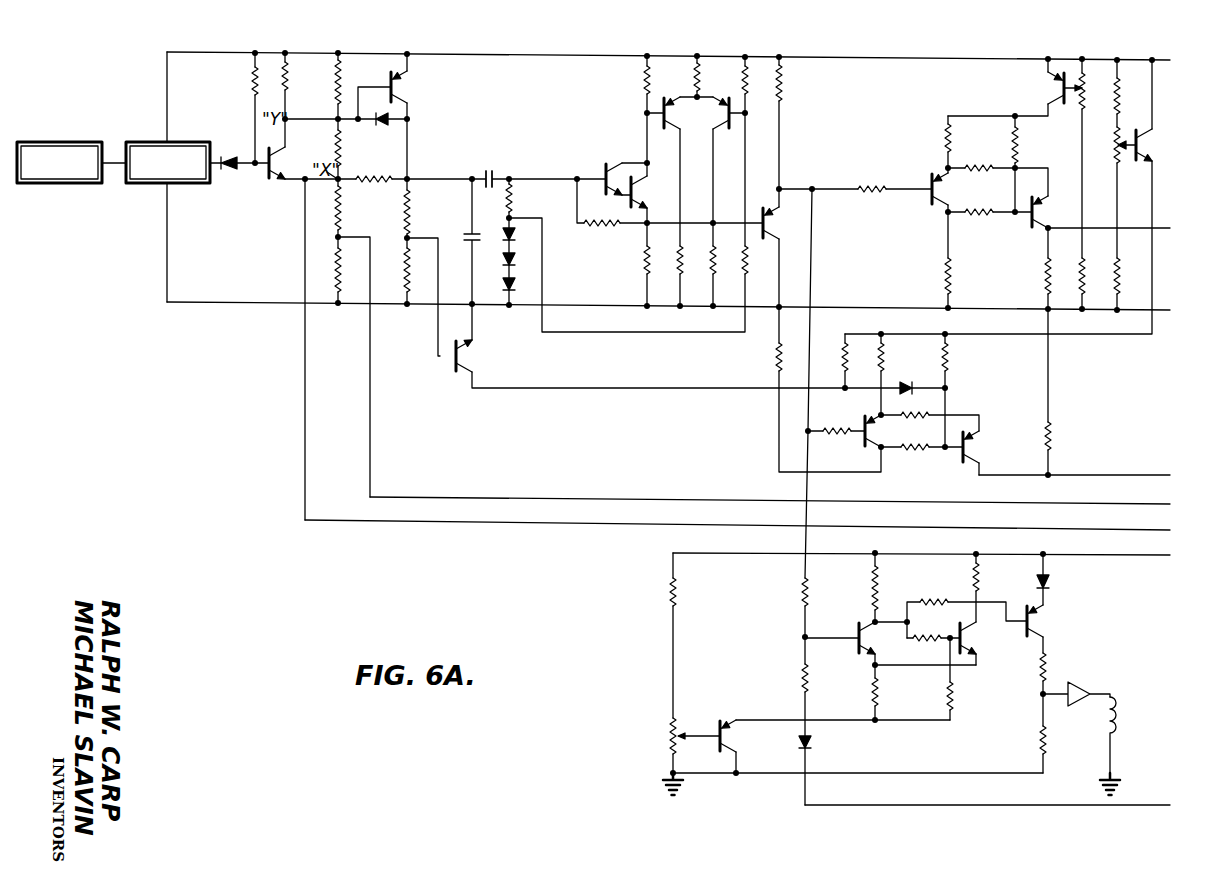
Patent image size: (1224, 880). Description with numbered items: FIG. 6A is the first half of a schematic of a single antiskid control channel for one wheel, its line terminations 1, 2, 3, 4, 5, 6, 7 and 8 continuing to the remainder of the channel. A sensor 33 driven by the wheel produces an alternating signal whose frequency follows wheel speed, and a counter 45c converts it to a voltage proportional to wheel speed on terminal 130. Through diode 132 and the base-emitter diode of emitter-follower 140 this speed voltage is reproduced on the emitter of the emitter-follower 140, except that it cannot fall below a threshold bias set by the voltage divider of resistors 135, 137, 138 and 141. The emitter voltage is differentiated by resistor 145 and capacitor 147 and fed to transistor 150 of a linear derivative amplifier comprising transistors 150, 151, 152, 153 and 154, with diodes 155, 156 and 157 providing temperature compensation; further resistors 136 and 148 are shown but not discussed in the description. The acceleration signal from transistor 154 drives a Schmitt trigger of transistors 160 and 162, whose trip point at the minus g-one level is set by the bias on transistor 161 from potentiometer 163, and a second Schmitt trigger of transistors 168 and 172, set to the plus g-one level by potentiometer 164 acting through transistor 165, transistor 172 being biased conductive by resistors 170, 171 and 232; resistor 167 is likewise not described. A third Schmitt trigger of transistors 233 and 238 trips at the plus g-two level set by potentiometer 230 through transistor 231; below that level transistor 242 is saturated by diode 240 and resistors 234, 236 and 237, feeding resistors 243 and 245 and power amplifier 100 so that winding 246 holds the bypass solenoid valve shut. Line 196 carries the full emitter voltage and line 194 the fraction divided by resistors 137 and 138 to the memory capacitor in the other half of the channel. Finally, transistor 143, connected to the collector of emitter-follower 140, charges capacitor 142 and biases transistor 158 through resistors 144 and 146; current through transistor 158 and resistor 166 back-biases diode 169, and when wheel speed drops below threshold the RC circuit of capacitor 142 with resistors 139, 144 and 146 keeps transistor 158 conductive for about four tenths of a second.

The line termination 1 is at (677, 60).
The line termination 2 is at (1117, 229).
The line termination 3 is at (677, 311).
The line termination 4 is at (1083, 477).
The line termination 5 is at (778, 506).
The line termination 6 is at (746, 531).
The line termination 7 is at (930, 557).
The line termination 8 is at (996, 806).
The sensor 33 is at (69, 142).
The counter 45c is at (140, 142).
The power amplifier 100 is at (1080, 688).
The terminal 130 is at (218, 158).
The diode 132 is at (233, 171).
The resistor 135 is at (337, 143).
The resistor 136 is at (250, 87).
The resistor 137 is at (341, 212).
The resistor 138 is at (337, 270).
The resistor 139 is at (288, 85).
The emitter-follower 140 is at (271, 179).
The resistor 141 is at (337, 92).
The capacitor 142 is at (373, 131).
The transistor 143 is at (408, 90).
The resistor 144 is at (409, 216).
The resistor 145 is at (377, 184).
The resistor 146 is at (405, 268).
The capacitor 147 is at (490, 167).
The resistor 148 is at (513, 202).
The transistor 150 is at (605, 170).
The transistor 151 is at (641, 193).
The transistor 152 is at (677, 82).
The transistor 153 is at (725, 95).
The transistor 154 is at (768, 222).
The diode 155 is at (507, 232).
The diode 156 is at (503, 263).
The diode 157 is at (503, 288).
The transistor 158 is at (448, 368).
The transistor 160 is at (931, 201).
The transistor 161 is at (1046, 88).
The transistor 162 is at (1027, 226).
The potentiometer 163 is at (1080, 109).
The potentiometer 164 is at (1115, 148).
The transistor 165 is at (1141, 145).
The resistor 166 is at (843, 352).
The resistor 167 is at (887, 363).
The transistor 168 is at (862, 439).
The diode 169 is at (907, 386).
The resistor 170 is at (920, 451).
The resistor 171 is at (951, 368).
The transistor 172 is at (970, 448).
The line 194 is at (486, 497).
The line 196 is at (476, 523).
The potentiometer 230 is at (668, 733).
The transistor 231 is at (722, 719).
The resistor 232 is at (772, 358).
The transistor 233 is at (857, 629).
The resistor 234 is at (872, 588).
The resistor 236 is at (926, 650).
The resistor 237 is at (946, 694).
The transistor 238 is at (984, 609).
The diode 240 is at (1052, 579).
The transistor 242 is at (1046, 627).
The resistor 243 is at (1048, 668).
The resistor 245 is at (1037, 735).
The winding 246 is at (1118, 728).